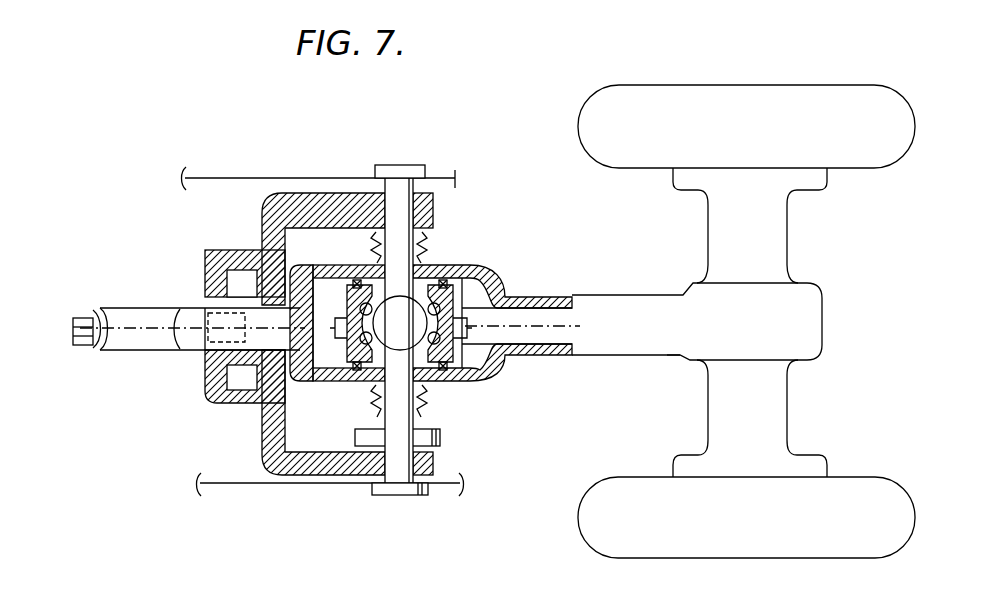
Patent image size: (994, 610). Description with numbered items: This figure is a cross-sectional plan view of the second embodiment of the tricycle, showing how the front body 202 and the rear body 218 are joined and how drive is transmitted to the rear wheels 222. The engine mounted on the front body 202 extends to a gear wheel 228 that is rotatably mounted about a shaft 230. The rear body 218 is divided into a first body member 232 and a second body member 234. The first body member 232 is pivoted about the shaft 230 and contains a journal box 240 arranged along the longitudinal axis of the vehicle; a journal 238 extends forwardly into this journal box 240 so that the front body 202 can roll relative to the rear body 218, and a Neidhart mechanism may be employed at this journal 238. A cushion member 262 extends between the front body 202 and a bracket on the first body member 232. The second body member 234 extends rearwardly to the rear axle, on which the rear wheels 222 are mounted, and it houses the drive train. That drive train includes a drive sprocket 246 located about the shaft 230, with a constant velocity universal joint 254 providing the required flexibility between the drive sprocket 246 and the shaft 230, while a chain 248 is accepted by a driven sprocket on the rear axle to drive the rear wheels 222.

The front body 202 is at (300, 487).
The rear body 218 is at (595, 298).
The rear wheels 222 is at (682, 86).
The gear wheel 228 is at (445, 437).
The shaft 230 is at (403, 200).
The first body member 232 is at (218, 262).
The second body member 234 is at (656, 352).
The journal 238 is at (205, 308).
The journal box 240 is at (208, 388).
The drive sprocket 246 is at (468, 315).
The chain 248 is at (545, 322).
The constant velocity universal joint 254 is at (455, 304).
The cushion member 262 is at (105, 348).